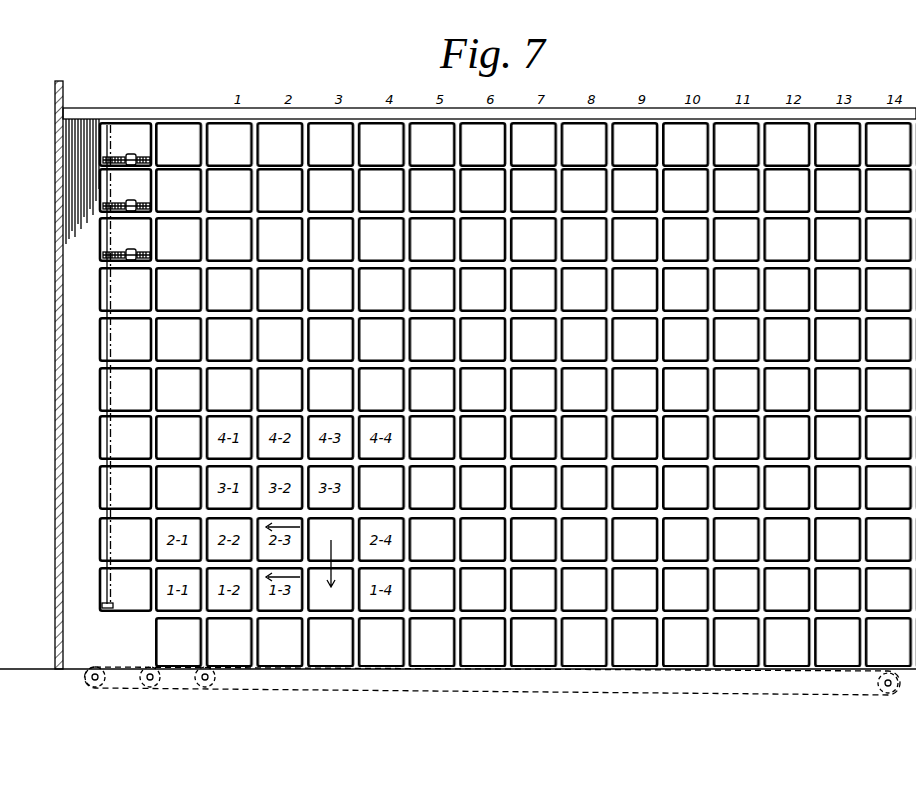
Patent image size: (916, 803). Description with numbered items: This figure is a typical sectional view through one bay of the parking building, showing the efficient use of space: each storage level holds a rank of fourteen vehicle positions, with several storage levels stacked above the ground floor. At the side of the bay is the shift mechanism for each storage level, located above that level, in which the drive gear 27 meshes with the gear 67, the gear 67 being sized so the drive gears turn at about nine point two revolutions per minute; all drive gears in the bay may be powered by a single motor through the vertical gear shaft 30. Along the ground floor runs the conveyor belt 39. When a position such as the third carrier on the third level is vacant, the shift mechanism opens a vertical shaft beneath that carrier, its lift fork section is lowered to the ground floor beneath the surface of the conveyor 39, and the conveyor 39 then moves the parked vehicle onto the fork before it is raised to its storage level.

The drive gear 27 is at (123, 254).
The vertical gear shaft 30 is at (110, 279).
The conveyor belt 39 is at (262, 695).
The gear 67 is at (118, 205).